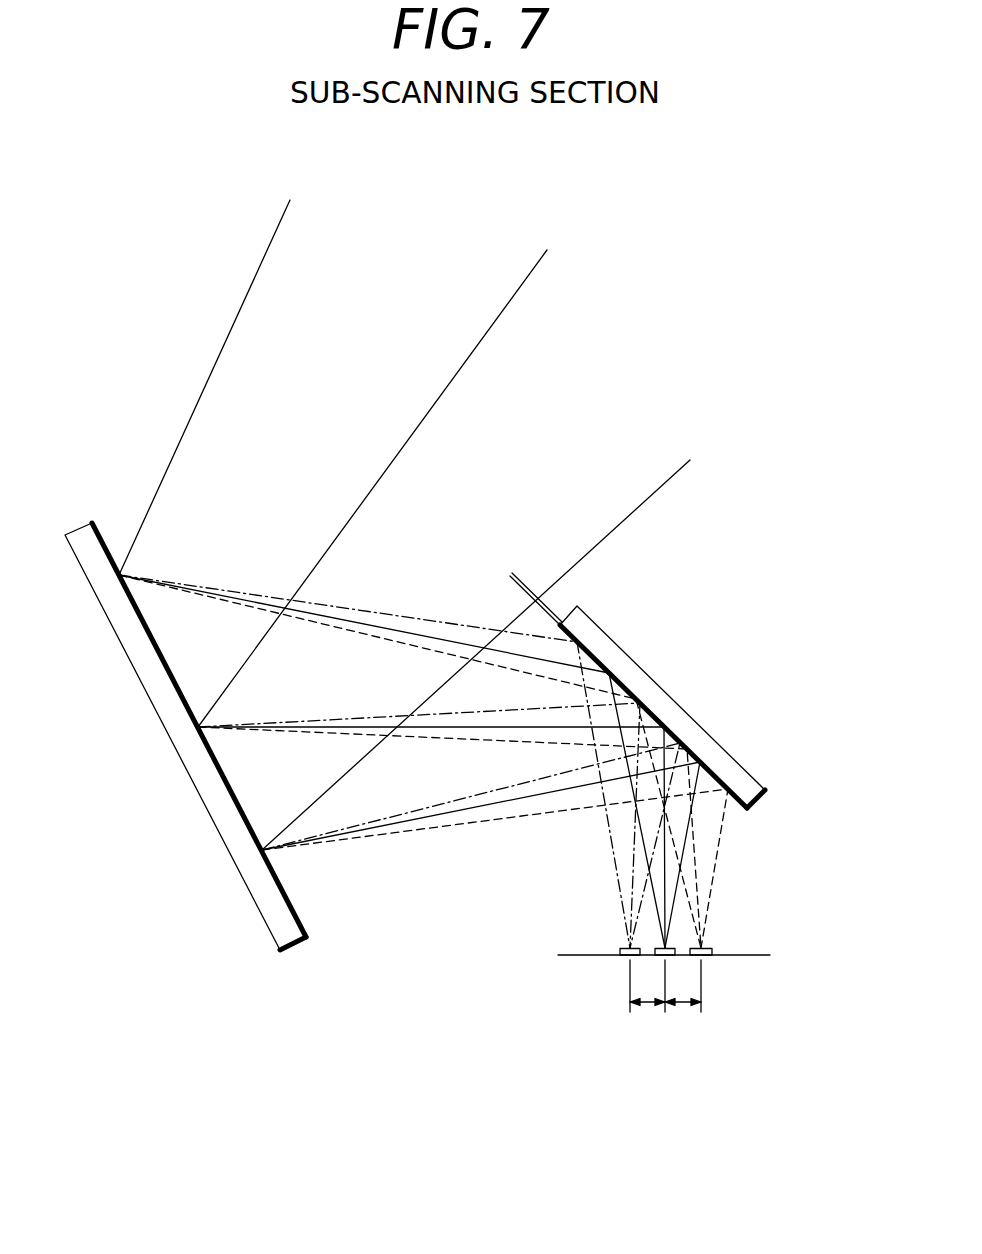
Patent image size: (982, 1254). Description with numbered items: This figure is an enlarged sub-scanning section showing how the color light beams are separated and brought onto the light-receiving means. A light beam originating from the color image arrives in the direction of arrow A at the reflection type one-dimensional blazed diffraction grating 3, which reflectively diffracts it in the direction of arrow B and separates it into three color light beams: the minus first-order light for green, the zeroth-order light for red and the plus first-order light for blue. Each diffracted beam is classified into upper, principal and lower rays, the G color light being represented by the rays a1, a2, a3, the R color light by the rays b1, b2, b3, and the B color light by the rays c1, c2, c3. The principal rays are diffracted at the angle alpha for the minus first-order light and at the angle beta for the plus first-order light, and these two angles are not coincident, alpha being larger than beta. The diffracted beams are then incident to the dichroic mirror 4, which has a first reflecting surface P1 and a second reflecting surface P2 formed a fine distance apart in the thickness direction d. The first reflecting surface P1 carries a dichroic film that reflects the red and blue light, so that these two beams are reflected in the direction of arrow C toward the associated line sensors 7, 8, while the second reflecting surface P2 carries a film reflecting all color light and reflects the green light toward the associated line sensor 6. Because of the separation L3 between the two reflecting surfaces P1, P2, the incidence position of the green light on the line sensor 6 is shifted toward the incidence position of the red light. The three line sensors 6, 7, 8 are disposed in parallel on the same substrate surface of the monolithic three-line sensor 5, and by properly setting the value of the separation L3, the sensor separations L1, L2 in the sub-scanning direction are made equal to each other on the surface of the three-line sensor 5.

The reflection type one-dimensional blazed diffraction grating 3 is at (283, 953).
The dichroic mirror 4 is at (677, 703).
The monolithic 3-line sensor 5 is at (753, 953).
The line sensor 6 is at (620, 957).
The line sensor 7 is at (655, 958).
The line sensor 8 is at (712, 957).
The G color light ray a1 is at (328, 603).
The R color light ray b1 is at (370, 625).
The B color light ray c1 is at (423, 647).
The G color light ray a2 is at (487, 712).
The R color light ray b2 is at (447, 728).
The B color light ray c2 is at (403, 738).
The G color light ray a3 is at (318, 838).
The R color light ray b3 is at (385, 830).
The B color light ray c3 is at (448, 830).
The diffraction angle alpha is at (327, 720).
The diffraction angle beta is at (328, 727).
The direction of incident light beam A is at (368, 435).
The direction of reflective diffraction B is at (297, 753).
The direction of reflected light beams C is at (593, 830).
The thickness direction d is at (818, 833).
The sensor separation L1 is at (647, 1007).
The sensor separation L2 is at (683, 1007).
The separation between reflecting surfaces L3 is at (570, 545).
The first reflecting surface P1 is at (733, 800).
The second reflecting surface P2 is at (750, 783).